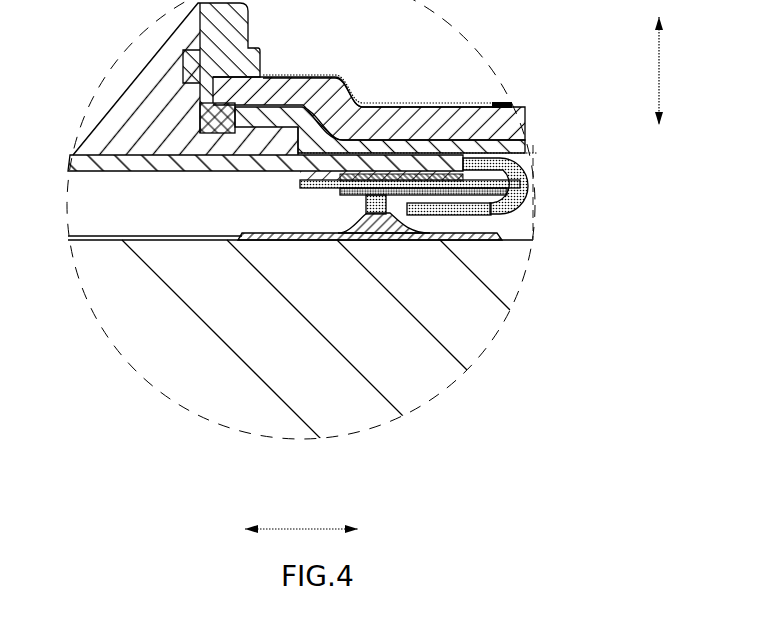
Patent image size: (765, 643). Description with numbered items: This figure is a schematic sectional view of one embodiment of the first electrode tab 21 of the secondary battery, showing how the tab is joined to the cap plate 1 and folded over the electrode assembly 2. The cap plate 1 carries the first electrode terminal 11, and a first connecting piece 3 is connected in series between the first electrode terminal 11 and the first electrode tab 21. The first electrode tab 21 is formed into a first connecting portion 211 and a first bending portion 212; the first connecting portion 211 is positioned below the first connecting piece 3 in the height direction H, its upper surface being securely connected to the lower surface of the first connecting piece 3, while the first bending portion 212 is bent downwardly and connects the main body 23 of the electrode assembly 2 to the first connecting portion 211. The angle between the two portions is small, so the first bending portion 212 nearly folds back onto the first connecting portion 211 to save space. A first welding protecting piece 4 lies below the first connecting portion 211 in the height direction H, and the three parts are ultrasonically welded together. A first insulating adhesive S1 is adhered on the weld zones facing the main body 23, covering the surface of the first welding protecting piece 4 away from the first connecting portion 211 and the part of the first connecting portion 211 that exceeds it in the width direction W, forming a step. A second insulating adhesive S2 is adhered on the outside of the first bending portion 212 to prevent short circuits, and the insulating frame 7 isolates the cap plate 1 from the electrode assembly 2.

The cap plate 1 is at (484, 118).
The electrode assembly 2 is at (370, 292).
The first connecting piece 3 is at (104, 160).
The first welding protecting piece 4 is at (322, 176).
The insulating frame 7 is at (306, 78).
The first electrode terminal 11 is at (147, 63).
The first electrode tab 21 is at (526, 191).
The first connecting portion 211 is at (527, 157).
The first bending portion 212 is at (480, 216).
The main body 23 is at (462, 322).
The first insulating adhesive S1 is at (345, 190).
The second insulating adhesive S2 is at (446, 212).
The height direction H is at (670, 71).
The width direction W is at (301, 514).